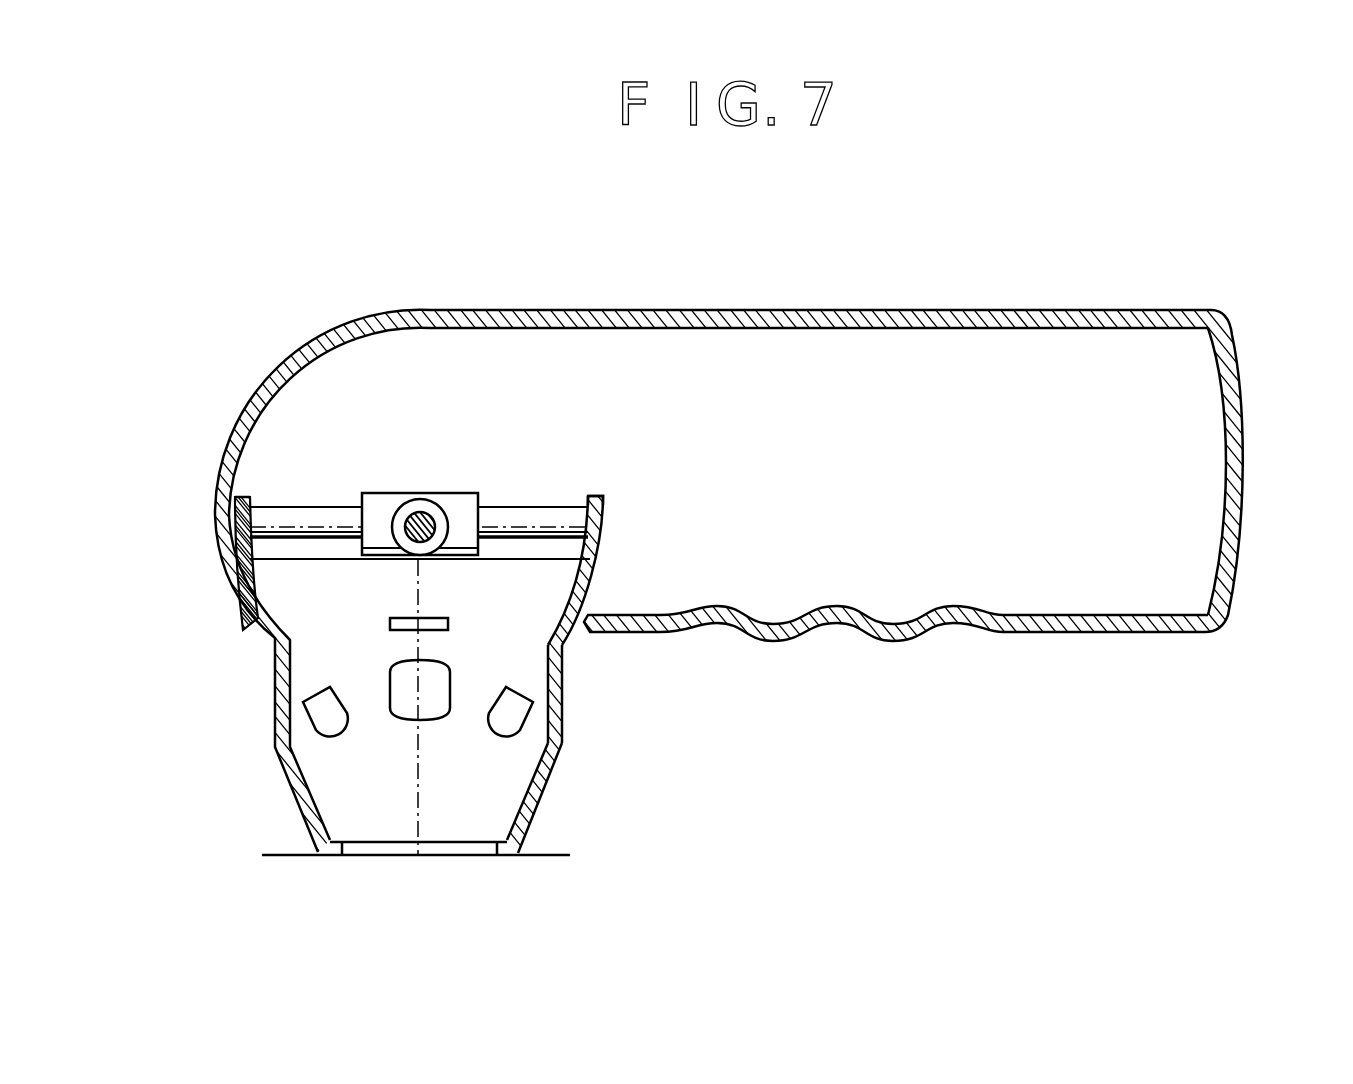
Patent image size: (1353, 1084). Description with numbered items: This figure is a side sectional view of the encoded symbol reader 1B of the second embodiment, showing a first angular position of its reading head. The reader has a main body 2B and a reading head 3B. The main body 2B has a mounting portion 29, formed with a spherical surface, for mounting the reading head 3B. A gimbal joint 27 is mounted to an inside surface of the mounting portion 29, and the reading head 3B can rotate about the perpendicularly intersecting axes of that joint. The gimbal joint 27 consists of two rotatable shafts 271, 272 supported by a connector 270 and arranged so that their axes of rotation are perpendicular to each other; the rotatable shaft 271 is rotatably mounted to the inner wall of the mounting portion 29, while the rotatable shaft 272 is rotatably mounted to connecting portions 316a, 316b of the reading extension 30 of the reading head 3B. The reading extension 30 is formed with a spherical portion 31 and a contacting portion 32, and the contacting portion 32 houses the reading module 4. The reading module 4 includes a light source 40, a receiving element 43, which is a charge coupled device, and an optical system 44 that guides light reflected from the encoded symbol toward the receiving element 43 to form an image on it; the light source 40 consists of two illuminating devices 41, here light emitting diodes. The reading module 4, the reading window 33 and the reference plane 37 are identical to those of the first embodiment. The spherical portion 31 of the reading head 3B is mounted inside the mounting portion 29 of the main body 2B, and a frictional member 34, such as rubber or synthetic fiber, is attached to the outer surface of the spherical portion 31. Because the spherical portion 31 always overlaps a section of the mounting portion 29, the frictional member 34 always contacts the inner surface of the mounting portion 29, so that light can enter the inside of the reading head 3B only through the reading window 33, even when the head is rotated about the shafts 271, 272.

The encoded symbol reader 1B is at (676, 542).
The main body 2B is at (1253, 426).
The mounting portion 29 is at (410, 311).
The reading head 3B is at (268, 698).
The reading module 4 is at (358, 642).
The gimbal joint 27 is at (420, 497).
The connector 270 is at (457, 493).
The rotatable shaft 271 is at (413, 508).
The rotatable shaft 272 is at (300, 518).
The connecting portion 316a is at (238, 478).
The connecting portion 316b is at (595, 496).
The spherical portion 31 is at (600, 575).
The reading extension 30 is at (562, 680).
The contacting portion 32 is at (512, 858).
The reading window 33 is at (455, 858).
The frictional member 34 is at (238, 583).
The reference plane 37 is at (262, 855).
The light source 40 is at (476, 740).
The illuminating device 41 is at (330, 737).
The receiving element 43 is at (445, 616).
The optical system 44 is at (400, 720).